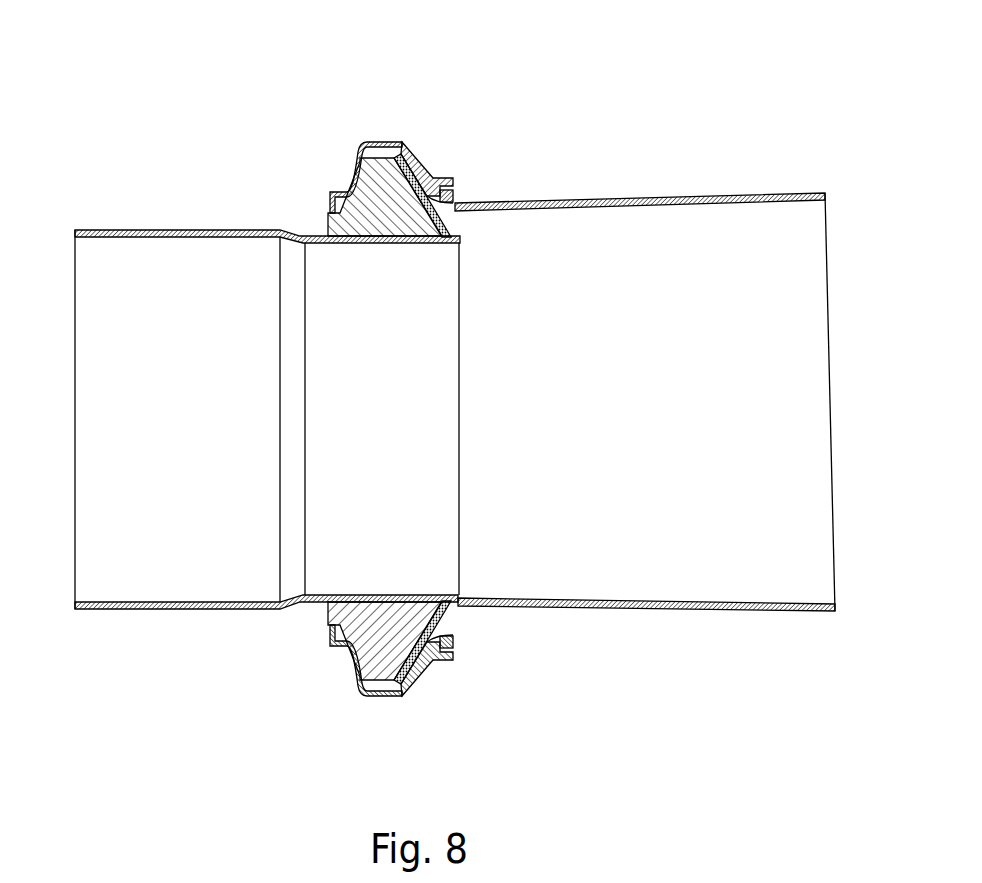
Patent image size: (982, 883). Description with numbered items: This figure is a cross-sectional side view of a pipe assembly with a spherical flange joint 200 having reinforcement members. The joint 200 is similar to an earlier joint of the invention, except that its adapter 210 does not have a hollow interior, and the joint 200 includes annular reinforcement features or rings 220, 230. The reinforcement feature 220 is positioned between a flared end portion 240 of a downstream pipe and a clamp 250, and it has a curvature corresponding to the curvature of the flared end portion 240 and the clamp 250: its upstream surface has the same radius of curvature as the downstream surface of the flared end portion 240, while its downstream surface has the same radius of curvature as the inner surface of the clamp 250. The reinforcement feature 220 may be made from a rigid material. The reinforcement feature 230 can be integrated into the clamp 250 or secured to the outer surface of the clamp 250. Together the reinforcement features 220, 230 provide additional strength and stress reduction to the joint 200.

The joint 200 is at (419, 104).
The adapter 210 is at (318, 224).
The reinforcement feature 220 is at (432, 170).
The reinforcement feature 230 is at (424, 167).
The flared end portion 240 is at (395, 157).
The clamp 250 is at (350, 173).